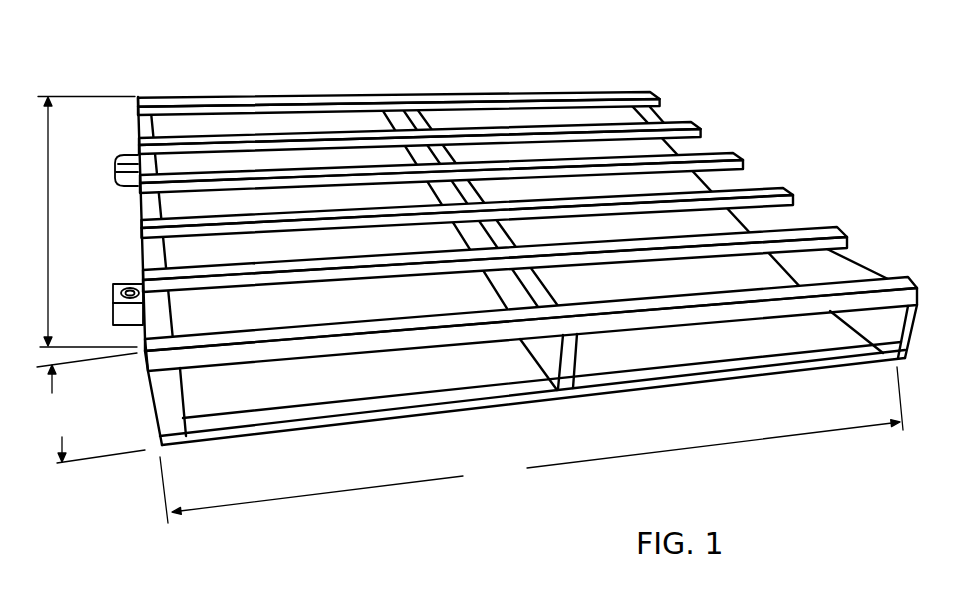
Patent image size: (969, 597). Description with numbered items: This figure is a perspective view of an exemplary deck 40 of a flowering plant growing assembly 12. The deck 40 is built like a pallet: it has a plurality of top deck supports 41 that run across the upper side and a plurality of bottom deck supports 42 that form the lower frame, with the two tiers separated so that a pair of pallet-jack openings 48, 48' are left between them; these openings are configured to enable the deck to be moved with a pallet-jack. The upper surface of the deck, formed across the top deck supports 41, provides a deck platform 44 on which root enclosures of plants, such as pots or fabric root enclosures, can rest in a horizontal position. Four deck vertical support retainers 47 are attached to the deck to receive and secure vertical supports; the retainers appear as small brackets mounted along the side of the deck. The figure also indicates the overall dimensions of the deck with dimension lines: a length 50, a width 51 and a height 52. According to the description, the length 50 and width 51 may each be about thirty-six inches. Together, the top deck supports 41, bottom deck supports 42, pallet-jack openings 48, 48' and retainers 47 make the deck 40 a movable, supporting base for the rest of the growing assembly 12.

The deck 40 is at (128, 82).
The flowering plant growing assembly 12 is at (753, 188).
The deck platform 44 is at (700, 131).
The top deck supports 41 is at (836, 292).
The bottom deck supports 42 is at (762, 367).
The pallet-jack opening 48 is at (542, 411).
The pallet-jack opening 48' is at (532, 386).
The deck vertical support retainer 47 is at (112, 286).
The length 50 is at (78, 222).
The width 51 is at (531, 445).
The height 52 is at (91, 408).